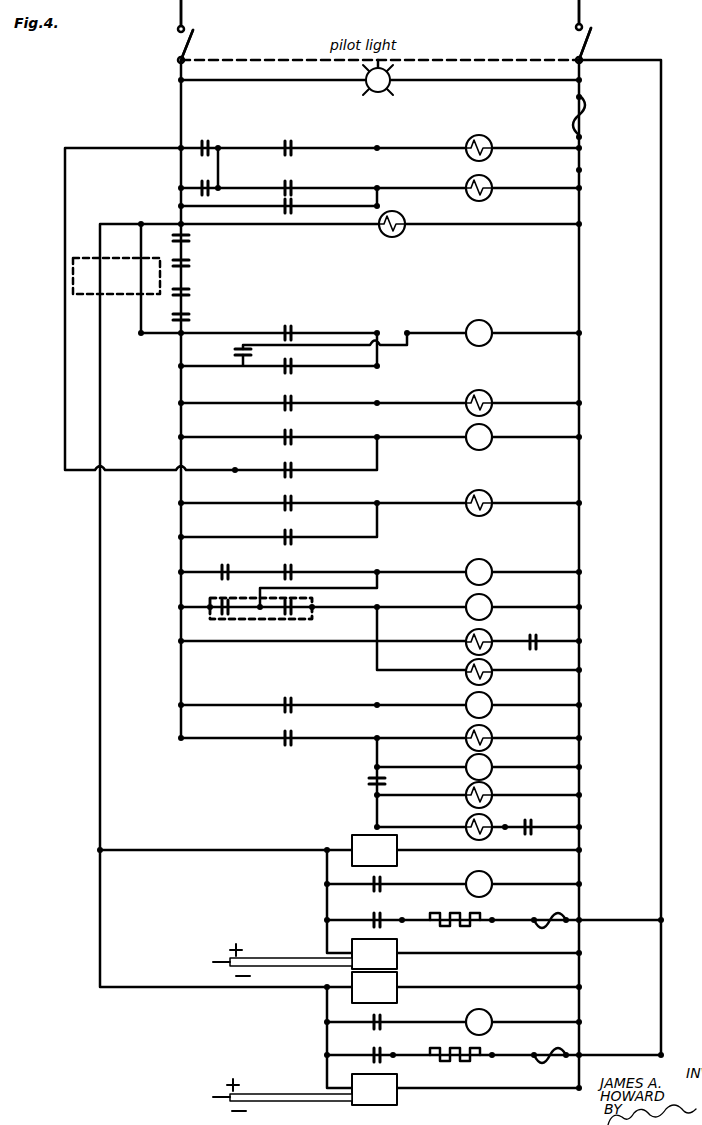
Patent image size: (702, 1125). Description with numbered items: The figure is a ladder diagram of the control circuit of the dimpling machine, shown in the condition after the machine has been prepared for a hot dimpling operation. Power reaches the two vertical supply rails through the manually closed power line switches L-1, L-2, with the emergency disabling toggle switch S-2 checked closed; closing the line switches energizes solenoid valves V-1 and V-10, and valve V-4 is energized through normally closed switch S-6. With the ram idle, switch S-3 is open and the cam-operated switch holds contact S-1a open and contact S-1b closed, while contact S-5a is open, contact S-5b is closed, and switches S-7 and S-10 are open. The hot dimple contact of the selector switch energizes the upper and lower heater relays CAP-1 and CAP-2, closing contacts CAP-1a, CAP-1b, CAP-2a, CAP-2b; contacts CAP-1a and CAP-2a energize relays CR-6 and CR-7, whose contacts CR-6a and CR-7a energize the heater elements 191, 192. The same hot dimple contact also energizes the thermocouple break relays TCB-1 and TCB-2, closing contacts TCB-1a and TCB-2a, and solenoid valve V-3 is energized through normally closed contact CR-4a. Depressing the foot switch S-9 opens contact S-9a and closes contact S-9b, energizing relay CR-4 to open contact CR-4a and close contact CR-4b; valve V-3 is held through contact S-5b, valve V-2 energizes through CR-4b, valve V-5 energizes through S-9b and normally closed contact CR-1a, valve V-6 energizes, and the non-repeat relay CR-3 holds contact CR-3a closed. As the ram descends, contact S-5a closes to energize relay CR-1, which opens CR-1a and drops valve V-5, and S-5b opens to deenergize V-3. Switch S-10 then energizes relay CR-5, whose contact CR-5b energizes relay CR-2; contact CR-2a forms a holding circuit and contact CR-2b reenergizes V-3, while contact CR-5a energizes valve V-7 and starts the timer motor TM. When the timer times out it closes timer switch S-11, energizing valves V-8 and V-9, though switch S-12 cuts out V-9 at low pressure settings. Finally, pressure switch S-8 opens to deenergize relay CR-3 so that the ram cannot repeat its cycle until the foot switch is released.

The power line switch L-1 is at (196, 37).
The power line switch L-2 is at (593, 37).
The contact of switch S-1 S-1a is at (212, 133).
The contact of switch S-1 S-1b is at (294, 133).
The emergency disabling toggle switch S-2 is at (196, 187).
The switch S-3 is at (292, 180).
The solenoid valve V-1 is at (478, 135).
The solenoid valve V-2 is at (468, 184).
The contact of relay CR-4 CR-4b is at (293, 206).
The solenoid valve V-10 is at (392, 237).
The contact of heater relay CAP-1 CAP-1b is at (190, 240).
The contact of heater relay CAP-2 CAP-2b is at (190, 265).
The contact of thermocouple break relay TCB-1 TCB-1a is at (190, 294).
The contact of thermocouple break relay TCB-2 TCB-2a is at (190, 319).
The normally closed contact of relay CR-4 CR-4a is at (293, 331).
The relay CR-1 is at (492, 325).
The contact of switch S-5 S-5a is at (240, 356).
The contact of switch S-5 S-5b is at (291, 364).
The contact of relay CR-2 CR-2b is at (292, 402).
The solenoid valve V-3 is at (492, 401).
The contact of relay CR-5 CR-5b is at (291, 436).
The relay CR-2 is at (492, 431).
The contact of relay CR-2 CR-2a is at (291, 468).
The switch S-6 is at (291, 501).
The solenoid valve V-4 is at (492, 498).
The switch S-7 is at (291, 535).
The pressure switch S-8 is at (237, 564).
The contact of relay CR-3 CR-3a is at (291, 570).
The non-repeat relay CR-3 is at (492, 565).
The normally closed contact of foot switch S-9 S-9a is at (225, 601).
The contact of foot switch S-9 S-9b is at (292, 612).
The foot switch S-9 is at (205, 623).
The relay CR-4 is at (492, 600).
The solenoid valve V-5 is at (467, 639).
The normally closed contact of relay CR-1 CR-1a is at (535, 632).
The solenoid valve V-6 is at (467, 669).
The relay CR-5 is at (492, 699).
The switch S-10 is at (293, 686).
The solenoid valve V-7 is at (492, 733).
The contact of relay CR-5 CR-5a is at (293, 745).
The timer motor TM is at (492, 761).
The timer switch S-11 is at (371, 783).
The solenoid valve V-8 is at (492, 790).
The solenoid valve V-9 is at (466, 822).
The switch S-12 is at (540, 812).
The upper heater relay CAP-1 is at (374, 850).
The contact of heater relay CAP-1 CAP-1a is at (382, 881).
The relay CR-6 is at (492, 877).
The contact of relay CR-6 CR-6a is at (382, 917).
The electric heater element 191 is at (478, 913).
The upper thermocouple break relay TCB-1 is at (374, 954).
The lower heater relay CAP-2 is at (374, 987).
The contact of heater relay CAP-2 CAP-2a is at (382, 1019).
The relay CR-7 is at (492, 1015).
The contact of relay CR-7 CR-7a is at (382, 1052).
The electric heater element 192 is at (470, 1062).
The lower thermocouple break relay TCB-2 is at (374, 1089).